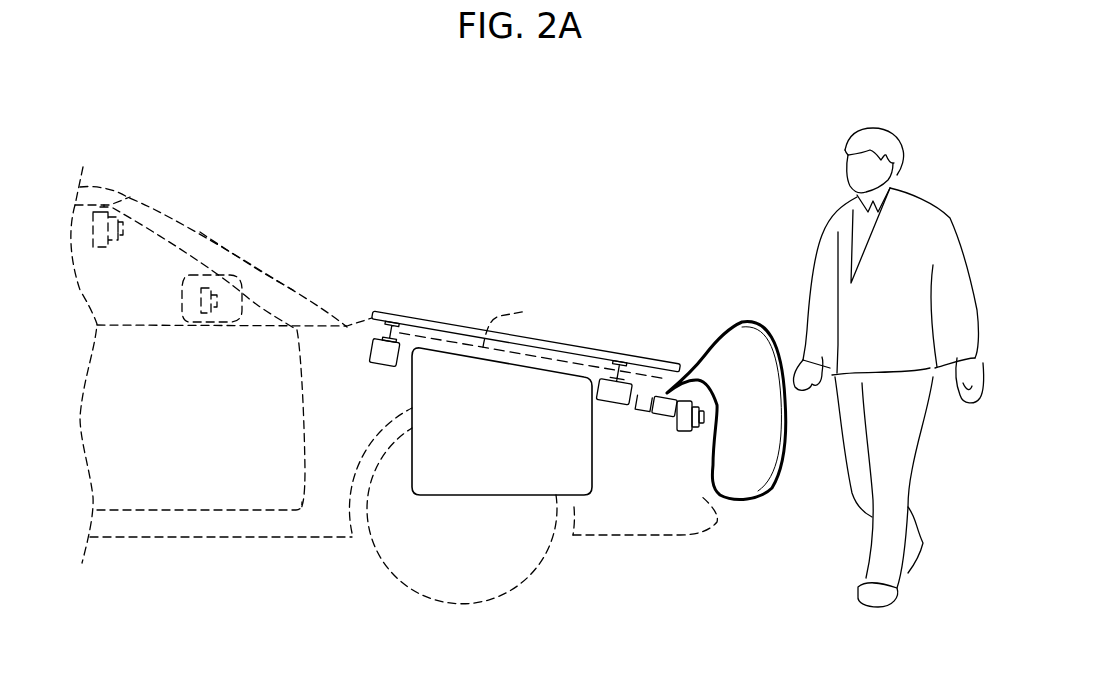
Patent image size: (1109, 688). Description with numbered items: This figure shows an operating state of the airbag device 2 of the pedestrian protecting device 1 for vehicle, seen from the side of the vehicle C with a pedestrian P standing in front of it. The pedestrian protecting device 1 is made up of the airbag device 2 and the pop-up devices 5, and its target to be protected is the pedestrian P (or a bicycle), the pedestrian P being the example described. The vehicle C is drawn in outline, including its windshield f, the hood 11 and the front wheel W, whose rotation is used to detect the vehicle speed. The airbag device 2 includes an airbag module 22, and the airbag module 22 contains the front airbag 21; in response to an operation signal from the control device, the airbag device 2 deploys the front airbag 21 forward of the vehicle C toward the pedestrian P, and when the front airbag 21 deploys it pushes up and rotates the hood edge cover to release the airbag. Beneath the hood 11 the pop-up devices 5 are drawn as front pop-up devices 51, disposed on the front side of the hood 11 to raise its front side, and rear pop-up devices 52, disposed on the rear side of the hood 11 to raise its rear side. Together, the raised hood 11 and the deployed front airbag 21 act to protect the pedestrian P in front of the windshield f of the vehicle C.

The pedestrian protecting device for vehicle 1 is at (667, 181).
The airbag device 2 is at (656, 294).
The pop-up devices 5 is at (597, 221).
The hood 11 is at (547, 343).
The front airbag 21 is at (748, 322).
The airbag module 22 is at (664, 416).
The front pop-up devices 51 is at (614, 375).
The rear pop-up devices 52 is at (407, 343).
The vehicle C is at (213, 200).
The windshield f is at (252, 260).
The pedestrian P is at (827, 234).
The wheel W is at (393, 578).